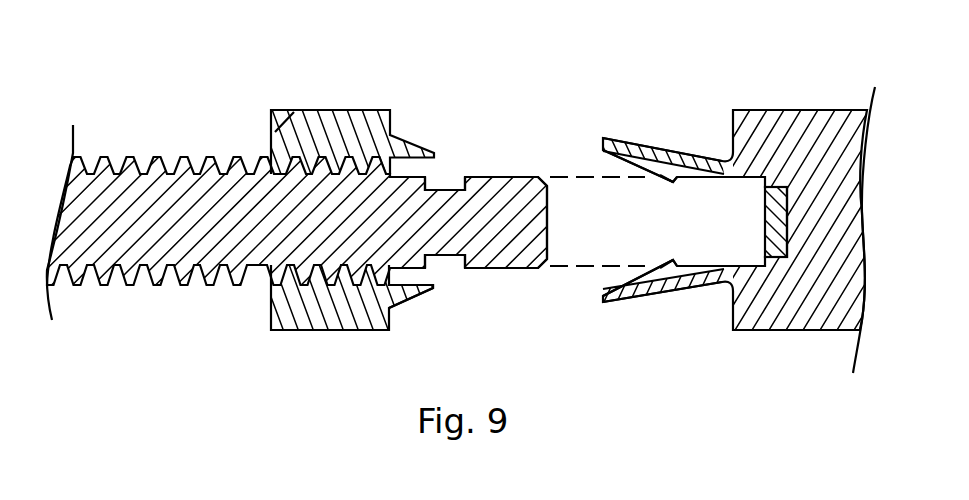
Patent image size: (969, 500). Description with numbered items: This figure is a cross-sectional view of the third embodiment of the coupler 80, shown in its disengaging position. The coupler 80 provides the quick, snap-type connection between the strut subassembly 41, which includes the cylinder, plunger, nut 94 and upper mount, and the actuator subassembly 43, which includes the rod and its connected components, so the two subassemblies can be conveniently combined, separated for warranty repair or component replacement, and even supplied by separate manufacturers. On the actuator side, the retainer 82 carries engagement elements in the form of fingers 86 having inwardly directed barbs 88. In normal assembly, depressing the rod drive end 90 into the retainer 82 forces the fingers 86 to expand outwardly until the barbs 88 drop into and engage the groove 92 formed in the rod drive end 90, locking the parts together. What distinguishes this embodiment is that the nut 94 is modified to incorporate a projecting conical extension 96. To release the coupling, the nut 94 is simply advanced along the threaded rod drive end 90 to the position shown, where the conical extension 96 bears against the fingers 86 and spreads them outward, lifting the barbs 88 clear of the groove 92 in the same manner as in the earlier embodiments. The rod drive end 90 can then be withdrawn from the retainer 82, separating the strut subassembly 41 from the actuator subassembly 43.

The strut subassembly 41 is at (396, 78).
The actuator subassembly 43 is at (734, 375).
The coupler 80 is at (771, 203).
The retainer 82 is at (733, 312).
The fingers 86 is at (635, 147).
The barbs 88 is at (658, 262).
The rod drive end 90 is at (505, 177).
The groove 92 is at (449, 257).
The nut 94 is at (315, 110).
The conical extension 96 is at (405, 298).